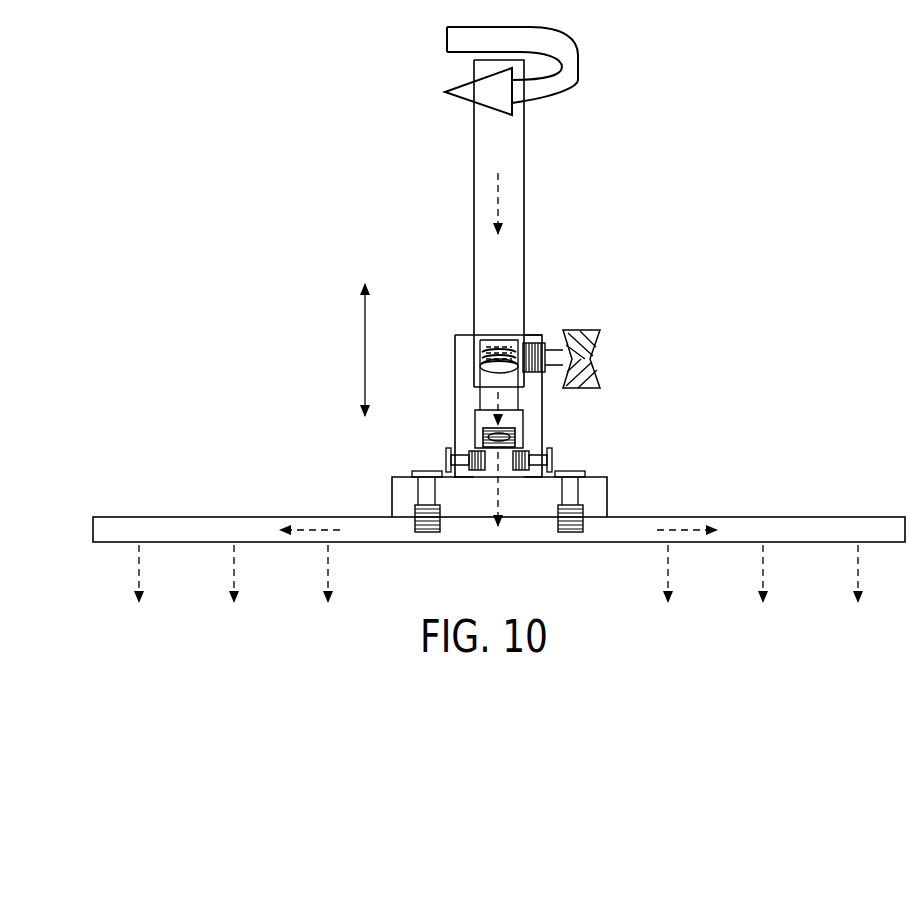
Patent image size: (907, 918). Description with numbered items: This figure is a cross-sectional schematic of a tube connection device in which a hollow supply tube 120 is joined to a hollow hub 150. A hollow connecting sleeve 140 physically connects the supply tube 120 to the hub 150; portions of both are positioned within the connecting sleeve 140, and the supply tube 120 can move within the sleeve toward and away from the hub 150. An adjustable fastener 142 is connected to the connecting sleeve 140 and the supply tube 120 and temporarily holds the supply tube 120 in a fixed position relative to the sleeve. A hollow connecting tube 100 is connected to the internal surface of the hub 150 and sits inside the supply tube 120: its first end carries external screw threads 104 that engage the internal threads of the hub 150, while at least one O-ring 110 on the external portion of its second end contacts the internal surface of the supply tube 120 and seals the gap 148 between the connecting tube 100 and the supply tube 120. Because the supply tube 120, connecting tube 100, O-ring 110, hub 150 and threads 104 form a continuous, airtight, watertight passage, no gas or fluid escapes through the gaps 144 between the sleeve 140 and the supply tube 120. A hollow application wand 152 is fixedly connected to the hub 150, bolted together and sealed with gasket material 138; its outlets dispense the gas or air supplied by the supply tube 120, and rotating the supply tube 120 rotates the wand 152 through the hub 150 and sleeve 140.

The connecting tube 100 is at (480, 404).
The external screw threads 104 is at (518, 434).
The O-ring 110 is at (478, 357).
The supply tube 120 is at (474, 208).
The gasket material 138 is at (530, 432).
The connecting sleeve 140 is at (455, 392).
The adjustable fastener 142 is at (595, 352).
The gaps 144 is at (534, 329).
The gap 148 is at (530, 390).
The hub 150 is at (392, 493).
The application wand 152 is at (178, 517).